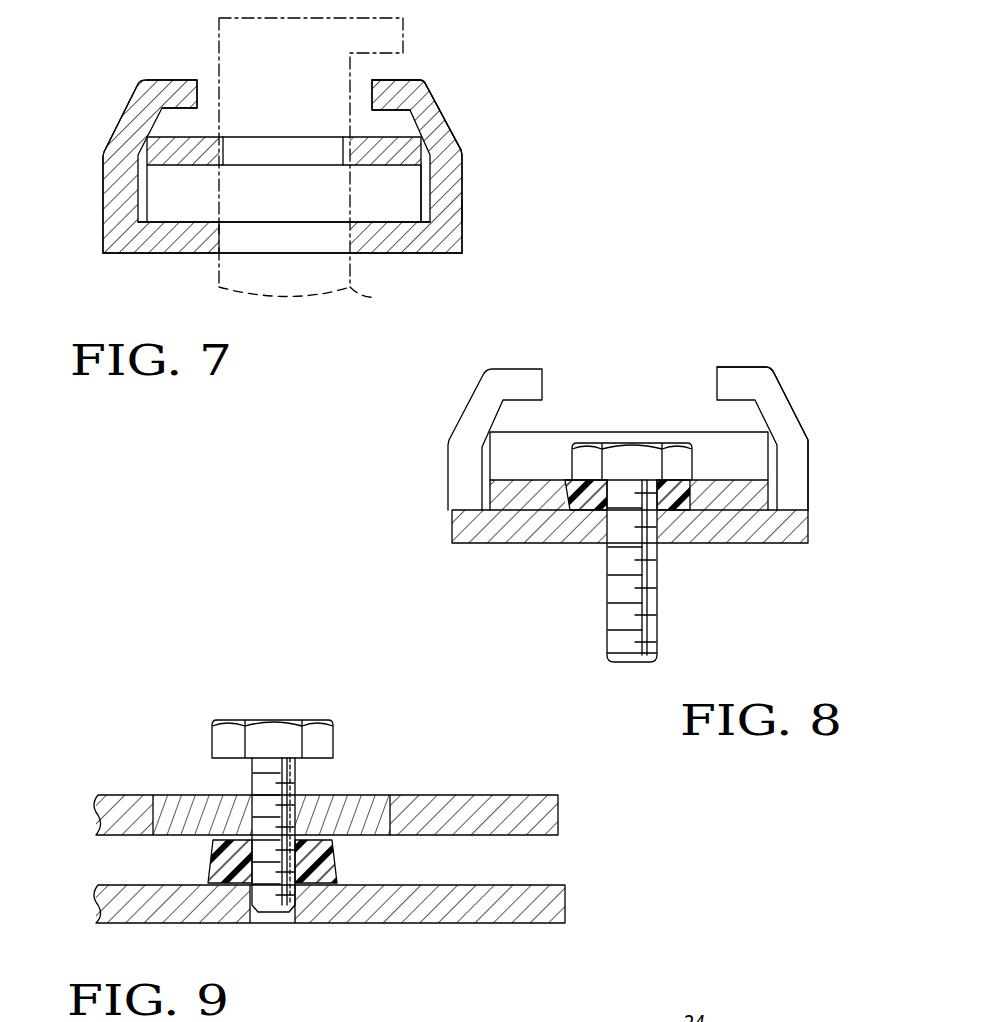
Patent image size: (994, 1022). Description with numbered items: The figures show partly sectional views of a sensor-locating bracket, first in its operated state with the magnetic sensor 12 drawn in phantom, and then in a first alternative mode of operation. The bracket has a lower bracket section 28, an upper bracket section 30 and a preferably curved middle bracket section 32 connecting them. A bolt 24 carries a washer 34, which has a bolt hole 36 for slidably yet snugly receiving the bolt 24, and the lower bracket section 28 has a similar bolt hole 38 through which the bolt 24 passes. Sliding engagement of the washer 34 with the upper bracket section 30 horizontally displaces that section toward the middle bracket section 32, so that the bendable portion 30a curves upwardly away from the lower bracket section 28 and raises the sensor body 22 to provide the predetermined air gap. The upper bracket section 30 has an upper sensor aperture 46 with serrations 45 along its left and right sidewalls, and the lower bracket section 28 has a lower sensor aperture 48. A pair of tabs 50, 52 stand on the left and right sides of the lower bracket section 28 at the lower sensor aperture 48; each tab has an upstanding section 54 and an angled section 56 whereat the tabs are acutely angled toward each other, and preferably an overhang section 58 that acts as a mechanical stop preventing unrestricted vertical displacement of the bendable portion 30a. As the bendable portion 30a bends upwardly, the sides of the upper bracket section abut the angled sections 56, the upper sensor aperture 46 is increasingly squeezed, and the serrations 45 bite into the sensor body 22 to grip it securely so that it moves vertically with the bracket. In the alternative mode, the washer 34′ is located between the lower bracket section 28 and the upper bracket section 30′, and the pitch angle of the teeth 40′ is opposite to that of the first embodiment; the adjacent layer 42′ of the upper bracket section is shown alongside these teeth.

In FIG. 7, the magnetic sensor 12 is at (218, 27).
In FIG. 7, the sensor body 22 is at (377, 297).
In FIG. 8, the bolt 24 is at (673, 455).
In FIG. 9, the bolt 24 is at (282, 723).
In FIG. 7, the lower bracket section 28 is at (195, 253).
In FIG. 8, the lower bracket section 28 is at (733, 543).
In FIG. 9, the lower bracket section 28 is at (447, 922).
In FIG. 8, the upper bracket section 30 is at (740, 478).
In FIG. 7, the bendable portion 30a is at (390, 135).
In FIG. 8, the bendable portion 30a is at (562, 432).
In FIG. 9, the upper bracket section 30′ is at (468, 792).
In FIG. 7, the middle bracket section 32 is at (422, 180).
In FIG. 8, the washer 34 is at (572, 515).
In FIG. 9, the washer 34′ is at (210, 860).
In FIG. 8, the bolt hole 36 is at (621, 495).
In FIG. 9, the bolt hole 36 is at (260, 867).
In FIG. 8, the bolt hole 38 is at (612, 543).
In FIG. 9, the bolt hole 38 is at (290, 925).
In FIG. 9, the teeth 40′ is at (192, 798).
In FIG. 9, the second layer 42′ is at (342, 802).
In FIG. 7, the serrations 45 is at (338, 148).
In FIG. 7, the upper sensor aperture 46 is at (225, 155).
In FIG. 7, the lower sensor aperture 48 is at (219, 237).
In FIG. 7, the tab 50 is at (100, 169).
In FIG. 8, the tab 50 is at (452, 423).
In FIG. 7, the tab 52 is at (441, 89).
In FIG. 8, the tab 52 is at (788, 387).
In FIG. 7, the upstanding section 54 is at (105, 217).
In FIG. 7, the angled section 56 is at (127, 107).
In FIG. 7, the overhang section 58 is at (187, 80).